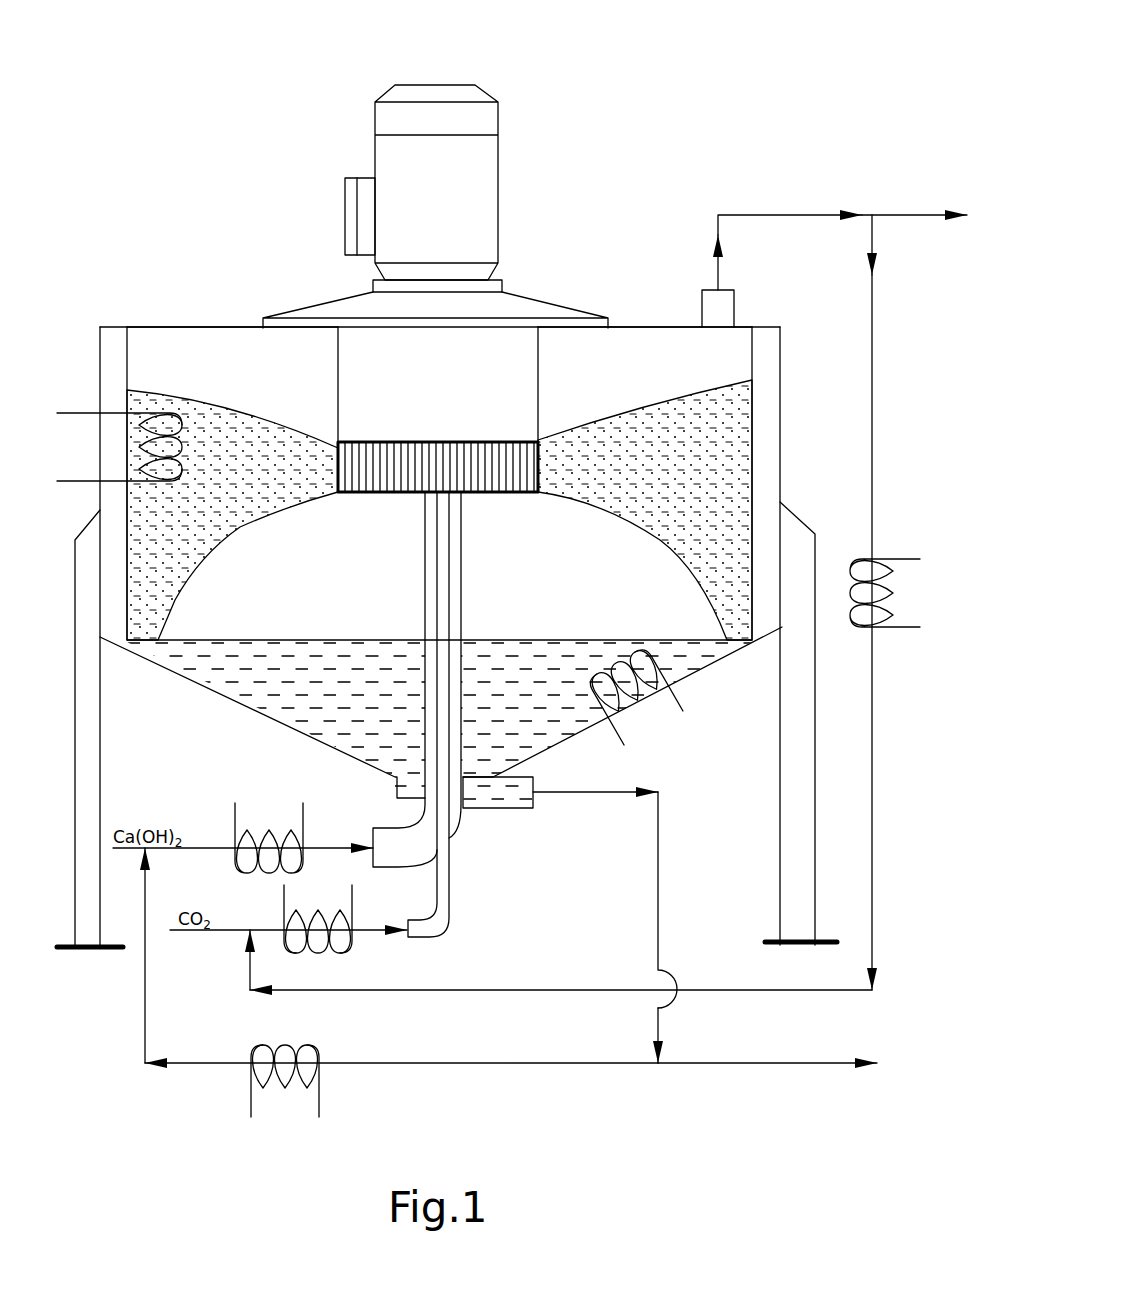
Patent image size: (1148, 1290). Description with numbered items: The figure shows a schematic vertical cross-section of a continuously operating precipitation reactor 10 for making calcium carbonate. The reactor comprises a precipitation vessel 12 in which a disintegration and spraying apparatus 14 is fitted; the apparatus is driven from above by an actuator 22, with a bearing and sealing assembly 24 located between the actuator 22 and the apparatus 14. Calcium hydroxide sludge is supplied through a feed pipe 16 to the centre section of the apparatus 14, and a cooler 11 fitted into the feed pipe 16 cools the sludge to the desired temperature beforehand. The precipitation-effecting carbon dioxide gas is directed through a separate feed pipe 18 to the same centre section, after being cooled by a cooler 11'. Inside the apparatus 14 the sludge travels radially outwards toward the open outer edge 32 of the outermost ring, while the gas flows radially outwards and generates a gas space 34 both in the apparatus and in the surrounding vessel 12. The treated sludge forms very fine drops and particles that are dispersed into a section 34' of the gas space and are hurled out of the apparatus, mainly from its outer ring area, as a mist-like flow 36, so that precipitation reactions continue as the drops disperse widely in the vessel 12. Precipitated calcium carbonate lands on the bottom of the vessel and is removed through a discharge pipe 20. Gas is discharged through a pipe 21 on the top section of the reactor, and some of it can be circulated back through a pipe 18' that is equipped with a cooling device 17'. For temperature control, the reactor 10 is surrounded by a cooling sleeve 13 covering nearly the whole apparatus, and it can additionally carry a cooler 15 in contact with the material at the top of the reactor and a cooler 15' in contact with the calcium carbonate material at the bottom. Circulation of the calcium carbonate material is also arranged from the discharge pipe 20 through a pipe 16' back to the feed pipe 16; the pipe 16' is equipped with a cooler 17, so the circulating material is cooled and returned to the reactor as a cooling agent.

The precipitation reactor 10 is at (673, 100).
The cooler 11 is at (269, 836).
The cooler 11' is at (318, 916).
The precipitation vessel 12 is at (245, 705).
The cooling sleeve 13 is at (110, 365).
The disintegration and spraying apparatus 14 is at (495, 430).
The cooler 15 is at (116, 447).
The cooler 15' is at (635, 695).
The feed pipe 16 is at (287, 679).
The pipe 16' is at (511, 979).
The cooler 17 is at (561, 1025).
The cooling device 17' is at (894, 593).
The feed pipe 18 is at (340, 714).
The pipe 18' is at (902, 602).
The discharge pipe 20 is at (503, 798).
The pipe 21 is at (782, 213).
The actuator 22 is at (487, 188).
The bearing and sealing assembly 24 is at (487, 340).
The open outer edge 32 is at (330, 484).
The gas space 34 is at (439, 356).
The section of the gas space 34' is at (502, 510).
The mist-like flow 36 is at (212, 537).